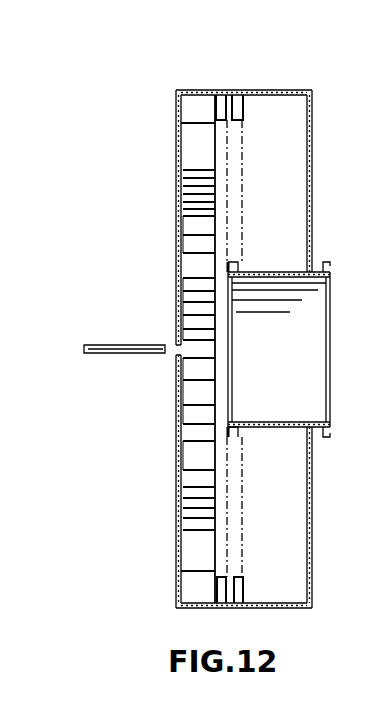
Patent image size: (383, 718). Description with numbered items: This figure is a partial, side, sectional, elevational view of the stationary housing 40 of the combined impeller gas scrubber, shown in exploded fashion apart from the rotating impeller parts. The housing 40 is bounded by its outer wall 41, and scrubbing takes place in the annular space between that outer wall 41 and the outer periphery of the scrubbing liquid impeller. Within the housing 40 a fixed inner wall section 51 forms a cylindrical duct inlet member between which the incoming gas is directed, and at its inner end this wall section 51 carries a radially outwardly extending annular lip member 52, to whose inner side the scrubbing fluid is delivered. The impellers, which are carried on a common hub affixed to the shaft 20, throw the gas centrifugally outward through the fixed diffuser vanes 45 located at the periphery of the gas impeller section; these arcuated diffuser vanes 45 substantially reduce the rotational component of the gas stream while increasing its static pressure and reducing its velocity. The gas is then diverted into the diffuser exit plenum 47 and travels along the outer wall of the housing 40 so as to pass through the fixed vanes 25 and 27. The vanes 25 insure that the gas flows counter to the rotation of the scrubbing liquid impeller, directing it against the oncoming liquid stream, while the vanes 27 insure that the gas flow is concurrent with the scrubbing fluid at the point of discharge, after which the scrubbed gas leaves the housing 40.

The housing 40 is at (282, 80).
The diffuser exit plenum 47 is at (188, 104).
The fixed diffuser vanes 45 is at (196, 389).
The fixed vanes 25 is at (217, 100).
The fixed vanes 27 is at (243, 97).
The outer wall 41 is at (229, 95).
The annular lip member 52 is at (236, 265).
The fixed inner wall section 51 is at (292, 425).
The shaft 20 is at (111, 348).